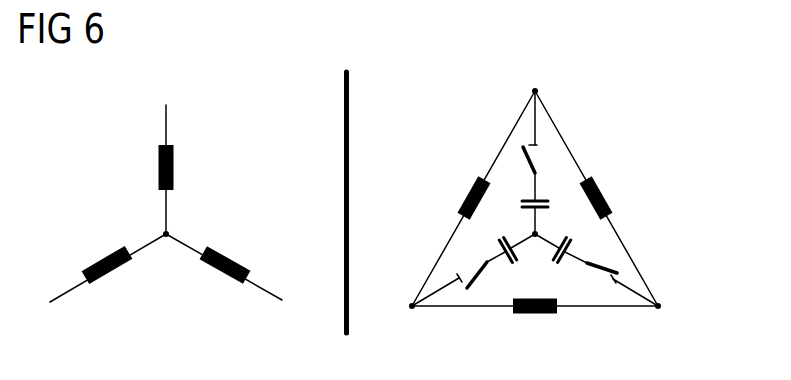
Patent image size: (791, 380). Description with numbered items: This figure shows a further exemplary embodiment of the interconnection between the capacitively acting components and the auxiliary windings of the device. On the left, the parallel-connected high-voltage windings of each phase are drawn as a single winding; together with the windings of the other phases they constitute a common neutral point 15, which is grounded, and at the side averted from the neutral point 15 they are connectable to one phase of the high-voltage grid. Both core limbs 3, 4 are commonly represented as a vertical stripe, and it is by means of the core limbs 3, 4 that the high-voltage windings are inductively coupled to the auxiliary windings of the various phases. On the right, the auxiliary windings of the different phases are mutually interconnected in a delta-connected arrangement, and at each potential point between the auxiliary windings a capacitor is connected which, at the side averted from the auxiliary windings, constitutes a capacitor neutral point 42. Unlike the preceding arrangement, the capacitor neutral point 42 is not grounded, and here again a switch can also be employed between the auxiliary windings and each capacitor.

The core limb 3 is at (310, 202).
The core limb 4 is at (344, 108).
The common neutral point 15 is at (166, 238).
The capacitor neutral point 42 is at (535, 240).